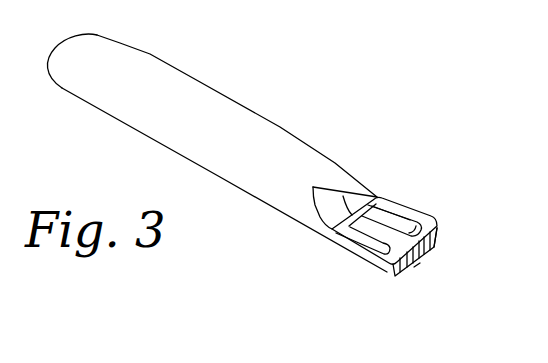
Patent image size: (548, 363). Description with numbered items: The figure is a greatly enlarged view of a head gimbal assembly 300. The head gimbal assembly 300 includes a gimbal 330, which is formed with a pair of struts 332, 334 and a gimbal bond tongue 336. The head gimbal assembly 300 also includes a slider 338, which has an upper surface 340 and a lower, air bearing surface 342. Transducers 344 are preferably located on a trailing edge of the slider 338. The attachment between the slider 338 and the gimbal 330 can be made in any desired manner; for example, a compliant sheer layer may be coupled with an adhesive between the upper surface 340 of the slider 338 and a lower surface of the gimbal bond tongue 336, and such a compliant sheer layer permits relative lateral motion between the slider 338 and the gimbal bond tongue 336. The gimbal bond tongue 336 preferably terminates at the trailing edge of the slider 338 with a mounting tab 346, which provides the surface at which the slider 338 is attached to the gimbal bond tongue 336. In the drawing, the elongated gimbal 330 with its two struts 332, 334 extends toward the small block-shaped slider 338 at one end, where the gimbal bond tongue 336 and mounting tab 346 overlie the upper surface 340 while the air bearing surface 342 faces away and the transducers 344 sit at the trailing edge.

The head gimbal assembly 300 is at (291, 78).
The gimbal 330 is at (184, 70).
The strut 332 is at (345, 243).
The strut 334 is at (391, 210).
The gimbal bond tongue 336 is at (438, 219).
The slider 338 is at (418, 278).
The upper surface 340 is at (393, 235).
The air bearing surface 342 is at (383, 278).
The transducers 344 is at (429, 259).
The mounting tab 346 is at (343, 196).